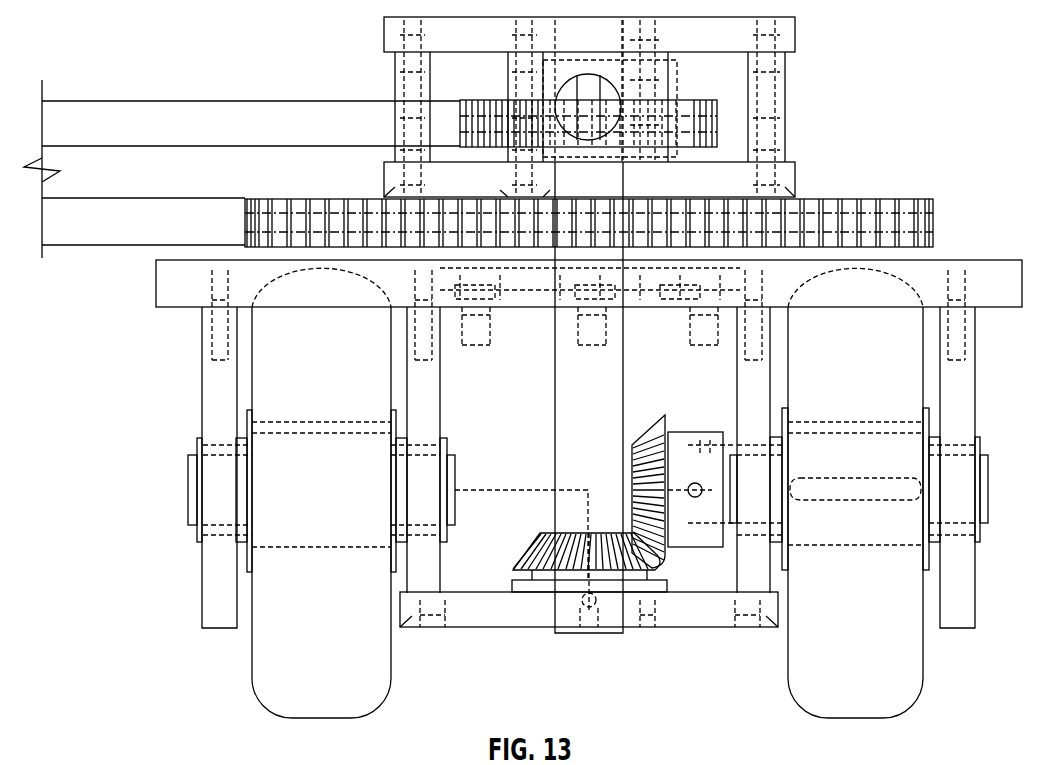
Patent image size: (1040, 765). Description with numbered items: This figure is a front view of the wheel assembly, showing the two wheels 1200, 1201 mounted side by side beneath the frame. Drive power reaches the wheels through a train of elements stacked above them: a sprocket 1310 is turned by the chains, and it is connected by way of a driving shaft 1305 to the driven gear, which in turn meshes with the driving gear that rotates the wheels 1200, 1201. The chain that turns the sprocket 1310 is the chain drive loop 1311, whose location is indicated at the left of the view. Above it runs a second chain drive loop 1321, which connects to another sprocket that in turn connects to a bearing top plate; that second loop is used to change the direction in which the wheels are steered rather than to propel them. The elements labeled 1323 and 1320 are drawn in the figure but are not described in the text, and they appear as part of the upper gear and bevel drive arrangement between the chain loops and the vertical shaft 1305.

The chain drive loop 1311 is at (173, 100).
The second chain drive loop 1321 is at (314, 91).
The pinion gear 1323 is at (470, 116).
The sprocket 1310 is at (266, 215).
The bevel gear drive assembly 1320 is at (383, 188).
The driving shaft 1305 is at (612, 425).
The wheel 1200 is at (343, 374).
The wheel 1201 is at (885, 374).